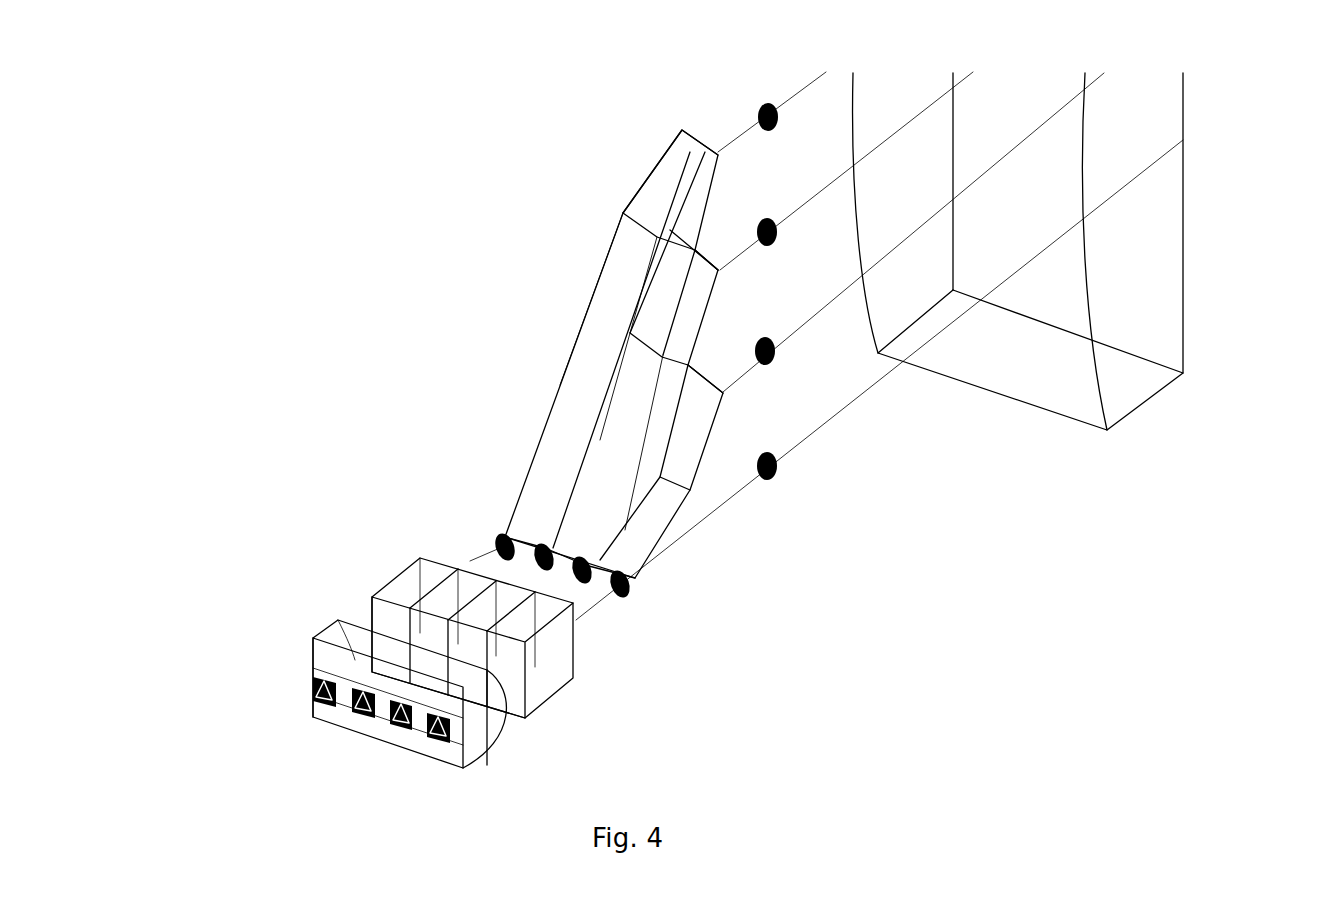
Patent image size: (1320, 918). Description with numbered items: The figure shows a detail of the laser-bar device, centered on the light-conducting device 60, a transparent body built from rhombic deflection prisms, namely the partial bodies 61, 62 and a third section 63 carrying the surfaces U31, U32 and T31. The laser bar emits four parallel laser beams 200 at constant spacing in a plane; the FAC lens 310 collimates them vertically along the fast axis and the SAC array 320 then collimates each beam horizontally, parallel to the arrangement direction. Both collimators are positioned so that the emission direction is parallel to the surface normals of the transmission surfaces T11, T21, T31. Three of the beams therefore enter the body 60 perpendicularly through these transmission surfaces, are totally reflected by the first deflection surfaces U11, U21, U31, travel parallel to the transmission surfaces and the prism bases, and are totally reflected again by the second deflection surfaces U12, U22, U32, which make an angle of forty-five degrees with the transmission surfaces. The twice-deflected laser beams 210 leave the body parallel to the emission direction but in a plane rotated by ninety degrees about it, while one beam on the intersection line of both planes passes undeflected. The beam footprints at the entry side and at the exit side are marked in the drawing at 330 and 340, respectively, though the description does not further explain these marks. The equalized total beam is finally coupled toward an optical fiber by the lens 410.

The light-conducting device 60 is at (343, 271).
The laser beams 200 is at (482, 560).
The twice-deflected laser beams 210 is at (740, 135).
The FAC lens 310 is at (312, 637).
The SAC array 320 is at (400, 577).
The light beam 330 is at (632, 603).
The light spot 340 is at (783, 472).
The lens 410 is at (1140, 393).
The partial body 61 is at (568, 478).
The partial body 62 is at (593, 536).
The third optical unit 63 is at (642, 519).
The first deflection surface U11 is at (547, 513).
The second deflection surface U12 is at (662, 188).
The first deflection surface U21 is at (550, 523).
The second deflection surface U22 is at (680, 313).
The first deflection surface U31 is at (663, 503).
The second deflection surface U32 is at (680, 423).
The transmission surface T11 is at (577, 390).
The transmission surface T21 is at (607, 445).
The transmission surface T31 is at (630, 532).